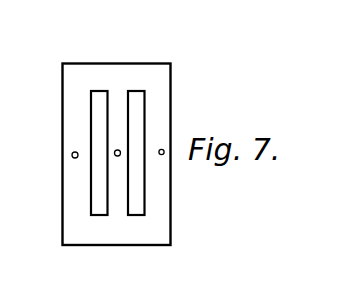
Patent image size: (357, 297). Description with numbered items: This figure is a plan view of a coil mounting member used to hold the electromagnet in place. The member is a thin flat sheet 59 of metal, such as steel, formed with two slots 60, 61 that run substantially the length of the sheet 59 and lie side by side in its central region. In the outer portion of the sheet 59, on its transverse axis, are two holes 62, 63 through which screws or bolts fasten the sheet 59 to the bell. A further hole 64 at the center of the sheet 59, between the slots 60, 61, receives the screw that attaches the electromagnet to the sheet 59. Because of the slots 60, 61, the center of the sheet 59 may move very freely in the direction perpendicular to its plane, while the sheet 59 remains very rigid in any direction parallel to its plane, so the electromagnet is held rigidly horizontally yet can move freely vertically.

The thin flat sheet 59 is at (72, 234).
The slot 60 is at (98, 192).
The slot 61 is at (138, 190).
The hole 62 is at (72, 154).
The hole 63 is at (164, 150).
The hole 64 is at (115, 151).